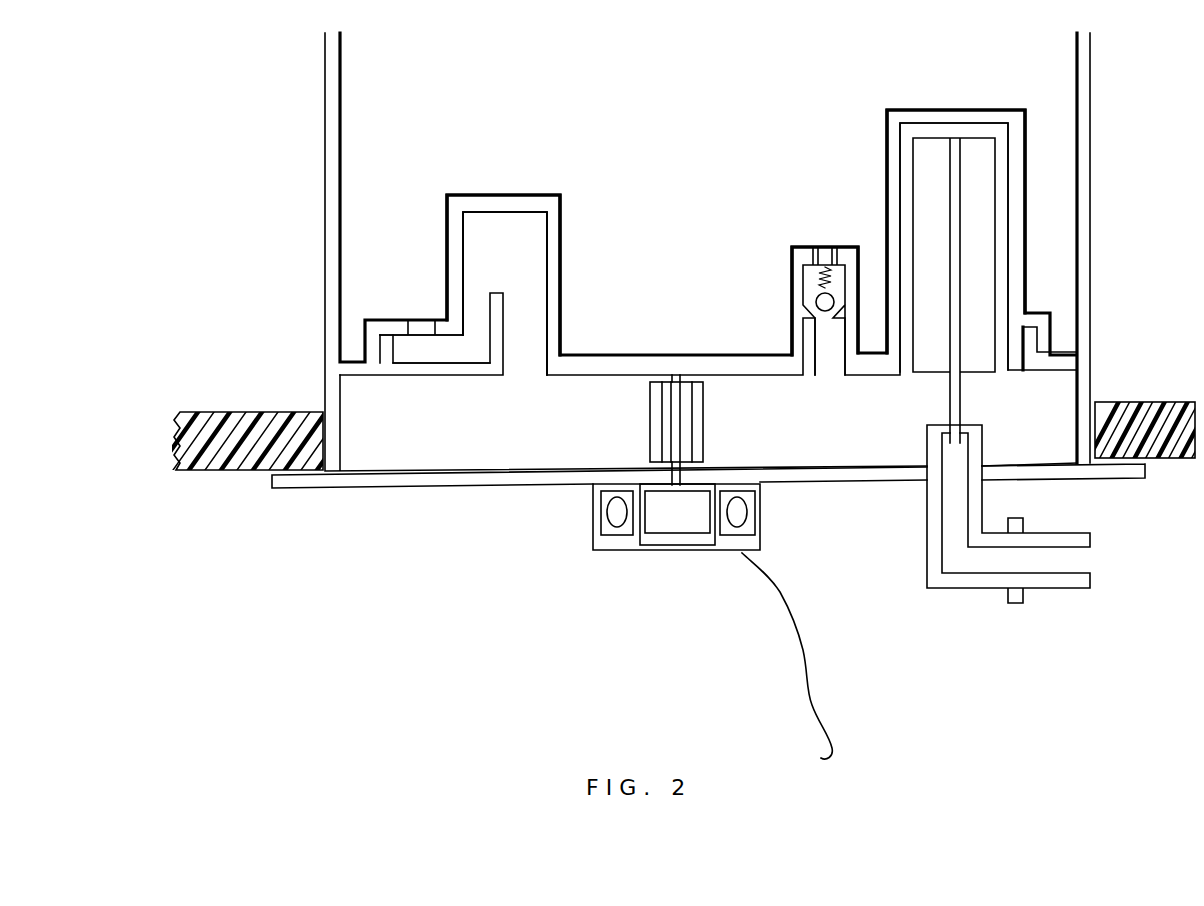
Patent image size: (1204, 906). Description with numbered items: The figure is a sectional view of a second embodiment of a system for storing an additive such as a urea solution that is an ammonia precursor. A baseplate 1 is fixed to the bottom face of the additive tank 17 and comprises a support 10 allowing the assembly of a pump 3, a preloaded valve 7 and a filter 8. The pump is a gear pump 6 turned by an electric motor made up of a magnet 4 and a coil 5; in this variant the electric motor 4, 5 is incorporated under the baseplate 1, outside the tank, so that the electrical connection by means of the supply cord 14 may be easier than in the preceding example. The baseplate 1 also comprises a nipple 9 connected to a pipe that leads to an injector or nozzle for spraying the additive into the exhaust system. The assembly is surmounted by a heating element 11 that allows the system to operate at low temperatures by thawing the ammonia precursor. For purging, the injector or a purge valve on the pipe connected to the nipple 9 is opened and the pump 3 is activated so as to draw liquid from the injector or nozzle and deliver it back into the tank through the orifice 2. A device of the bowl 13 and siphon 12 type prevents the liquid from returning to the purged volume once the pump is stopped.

The baseplate 1 is at (361, 505).
The orifice 2 is at (422, 302).
The pump 3 is at (602, 556).
The magnet 4 is at (681, 532).
The coil 5 is at (623, 527).
The gear pump 6 is at (657, 381).
The preloaded valve 7 is at (798, 230).
The filter 8 is at (920, 154).
The nipple 9 is at (1066, 614).
The support 10 is at (562, 203).
The heating element 11 is at (356, 120).
The siphon 12 is at (448, 369).
The bowl 13 is at (479, 226).
The supply cord 14 is at (826, 717).
The additive tank 17 is at (226, 488).